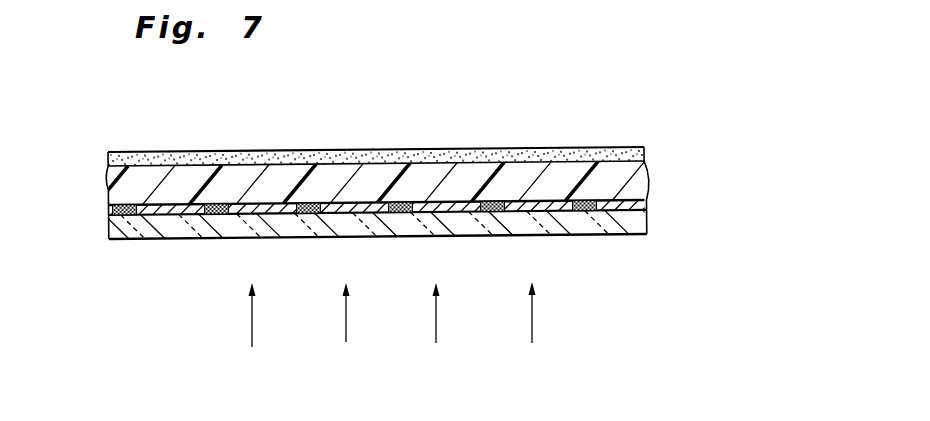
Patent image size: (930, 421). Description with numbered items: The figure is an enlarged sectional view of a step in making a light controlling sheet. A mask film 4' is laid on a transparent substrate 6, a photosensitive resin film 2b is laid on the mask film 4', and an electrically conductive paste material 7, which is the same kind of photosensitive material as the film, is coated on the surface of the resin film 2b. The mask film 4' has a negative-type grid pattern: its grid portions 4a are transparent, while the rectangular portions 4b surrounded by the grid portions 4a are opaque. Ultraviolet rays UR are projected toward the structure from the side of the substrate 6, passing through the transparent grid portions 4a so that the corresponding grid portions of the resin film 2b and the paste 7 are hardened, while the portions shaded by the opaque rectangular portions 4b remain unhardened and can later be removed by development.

The electrically conductive paste material 7 is at (237, 160).
The photosensitive resin film 2b is at (130, 192).
The rectangular portions 4b is at (463, 204).
The grid portions 4a is at (307, 213).
The mask film 4' is at (488, 252).
The transparent substrate 6 is at (195, 226).
The ultraviolet rays UR is at (346, 317).